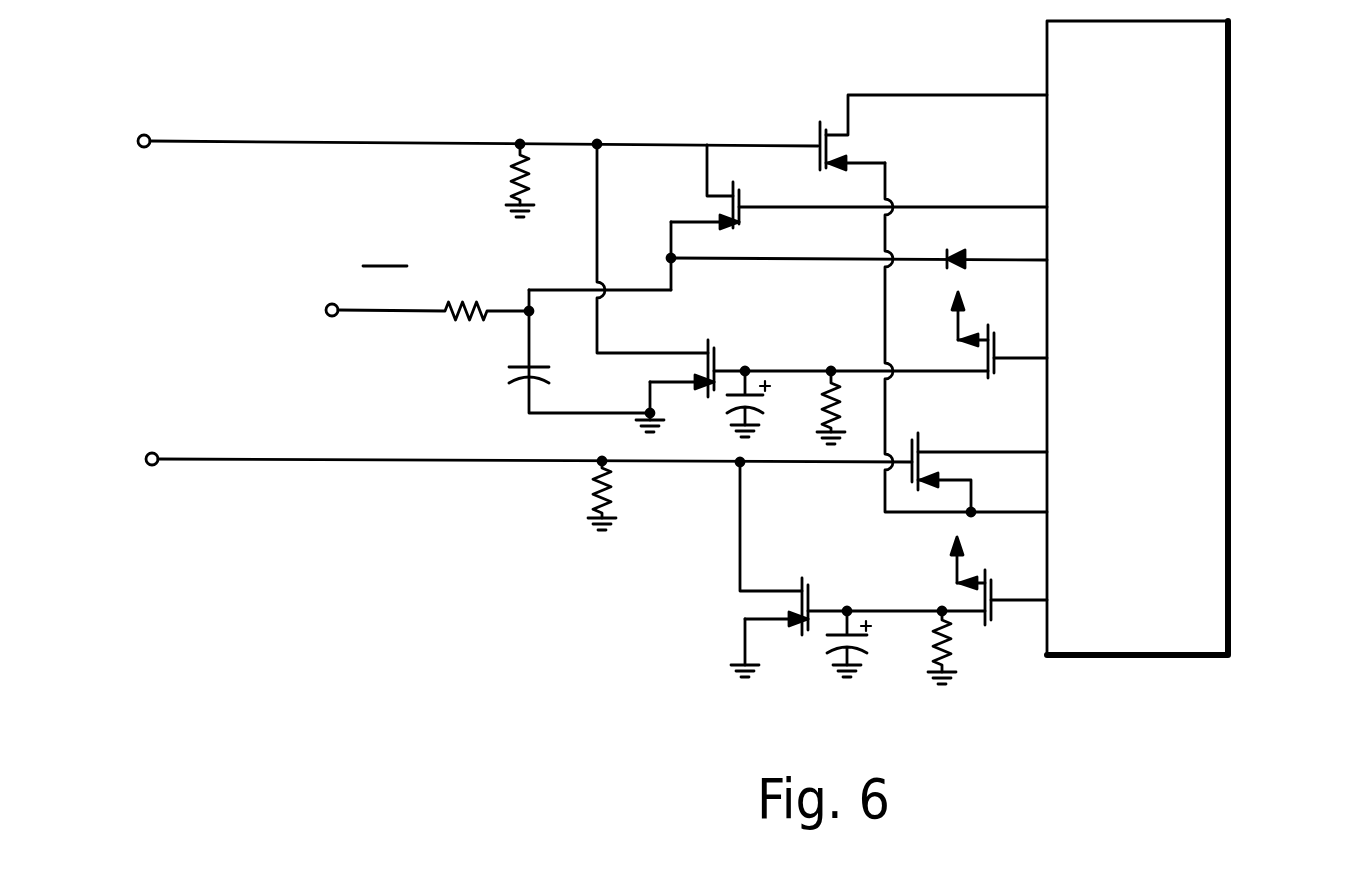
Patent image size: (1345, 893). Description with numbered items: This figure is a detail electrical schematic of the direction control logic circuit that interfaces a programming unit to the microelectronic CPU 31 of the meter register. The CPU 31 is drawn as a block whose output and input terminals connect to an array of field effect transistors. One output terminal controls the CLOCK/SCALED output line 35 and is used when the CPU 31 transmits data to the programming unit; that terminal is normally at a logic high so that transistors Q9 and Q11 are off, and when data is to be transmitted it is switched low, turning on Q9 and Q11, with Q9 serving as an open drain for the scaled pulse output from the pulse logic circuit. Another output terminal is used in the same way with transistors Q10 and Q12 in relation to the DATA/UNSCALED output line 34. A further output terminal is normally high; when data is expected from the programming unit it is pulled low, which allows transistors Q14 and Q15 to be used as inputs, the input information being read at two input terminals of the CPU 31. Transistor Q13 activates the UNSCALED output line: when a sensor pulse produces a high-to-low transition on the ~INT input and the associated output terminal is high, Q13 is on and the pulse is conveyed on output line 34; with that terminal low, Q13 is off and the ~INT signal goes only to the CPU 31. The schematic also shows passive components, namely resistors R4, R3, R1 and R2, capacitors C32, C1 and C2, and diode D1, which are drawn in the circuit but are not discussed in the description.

The CPU 31 is at (1231, 358).
The DATA/UNSCALED output line 34 is at (138, 137).
The CLOCK/SCALED output line 35 is at (147, 453).
The resistor R4 is at (512, 158).
The resistor R3 is at (473, 302).
The capacitor C32 is at (515, 366).
The field effect transistor Q13 is at (742, 206).
The field effect transistor Q15 is at (818, 143).
The diode D1 is at (946, 257).
The field effect transistor Q12 is at (717, 362).
The capacitor C1 is at (732, 407).
The resistor R1 is at (823, 408).
The field effect transistor Q10 is at (986, 378).
The field effect transistor Q14 is at (922, 448).
The field effect transistor Q9 is at (812, 596).
The capacitor C2 is at (855, 648).
The resistor R2 is at (950, 647).
The field effect transistor Q11 is at (1030, 560).